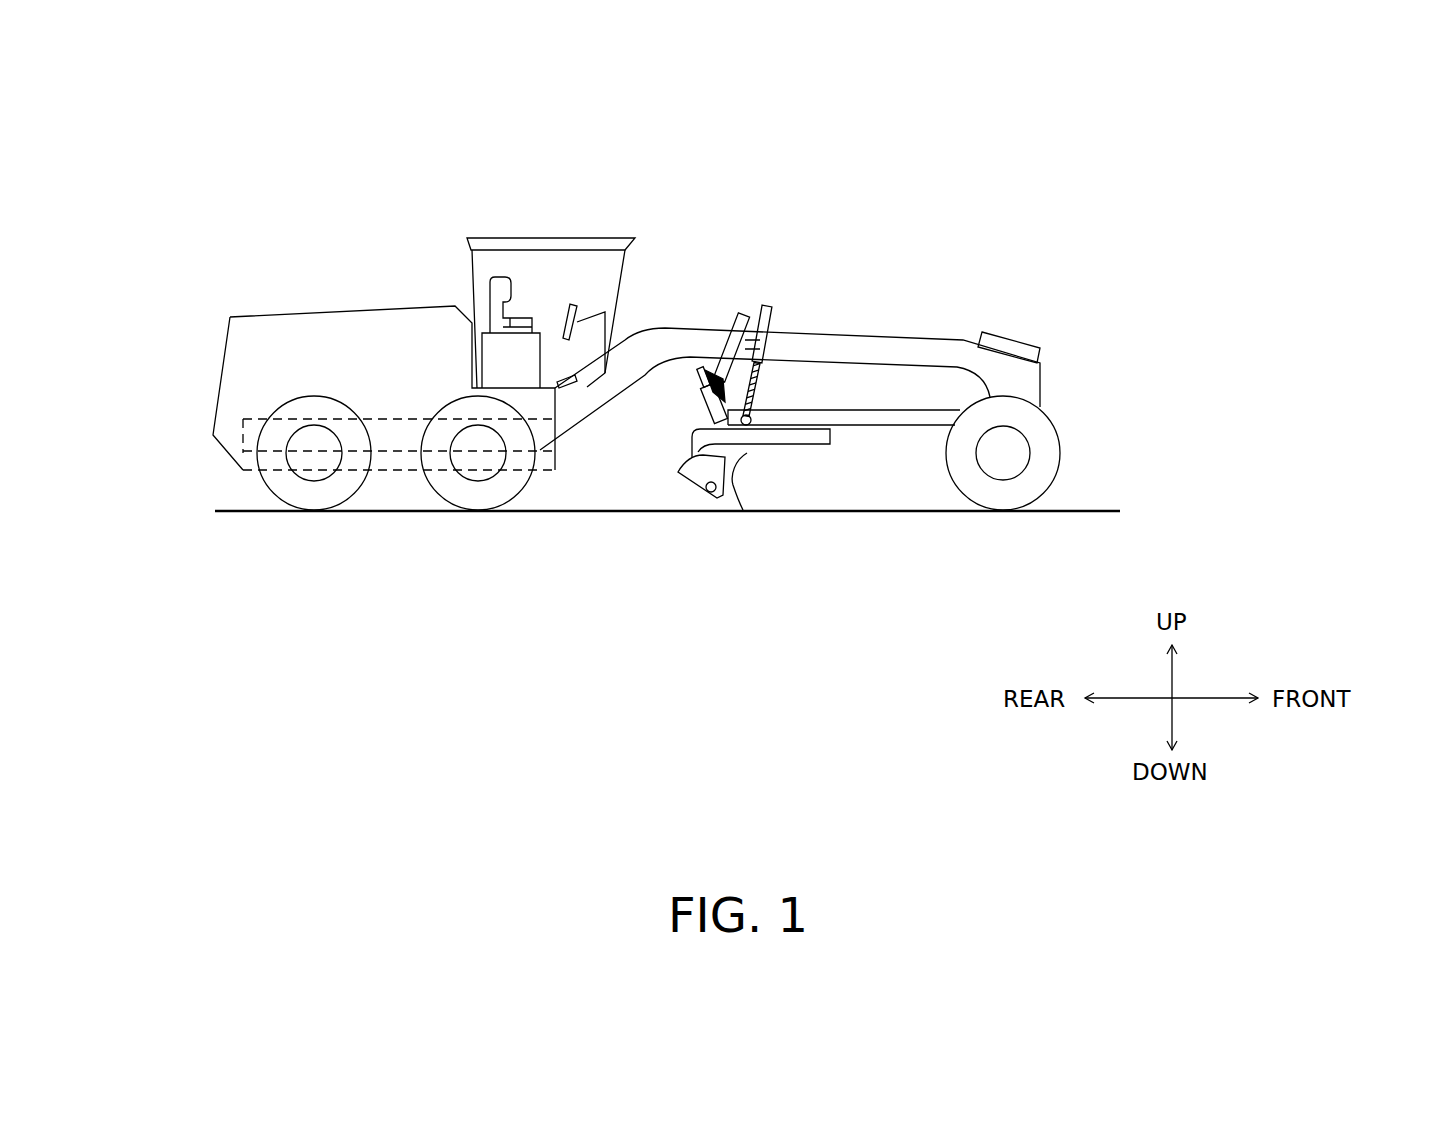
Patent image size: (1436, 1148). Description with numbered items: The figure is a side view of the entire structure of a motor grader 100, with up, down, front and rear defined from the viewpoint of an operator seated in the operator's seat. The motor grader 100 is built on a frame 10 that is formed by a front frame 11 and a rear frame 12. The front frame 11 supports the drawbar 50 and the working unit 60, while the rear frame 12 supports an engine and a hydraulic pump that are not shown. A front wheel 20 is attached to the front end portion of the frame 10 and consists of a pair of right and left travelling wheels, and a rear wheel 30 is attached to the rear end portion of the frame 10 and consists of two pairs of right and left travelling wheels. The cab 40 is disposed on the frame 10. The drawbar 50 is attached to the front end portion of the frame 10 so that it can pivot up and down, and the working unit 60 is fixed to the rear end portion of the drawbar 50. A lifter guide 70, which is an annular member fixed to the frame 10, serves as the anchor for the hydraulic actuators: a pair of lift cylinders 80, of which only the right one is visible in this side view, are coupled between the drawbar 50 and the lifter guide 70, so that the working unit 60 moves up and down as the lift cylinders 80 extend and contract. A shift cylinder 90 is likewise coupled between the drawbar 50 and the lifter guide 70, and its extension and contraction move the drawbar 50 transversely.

The motor grader 100 is at (540, 208).
The frame 10 is at (677, 330).
The front frame 11 is at (946, 358).
The rear frame 12 is at (290, 423).
The front wheel 20 is at (1002, 465).
The rear wheel 30 is at (473, 492).
The cab 40 is at (597, 238).
The drawbar 50 is at (908, 427).
The working unit 60 is at (727, 498).
The lifter guide 70 is at (745, 327).
The lift cylinders 80 is at (757, 388).
The shift cylinder 90 is at (707, 407).